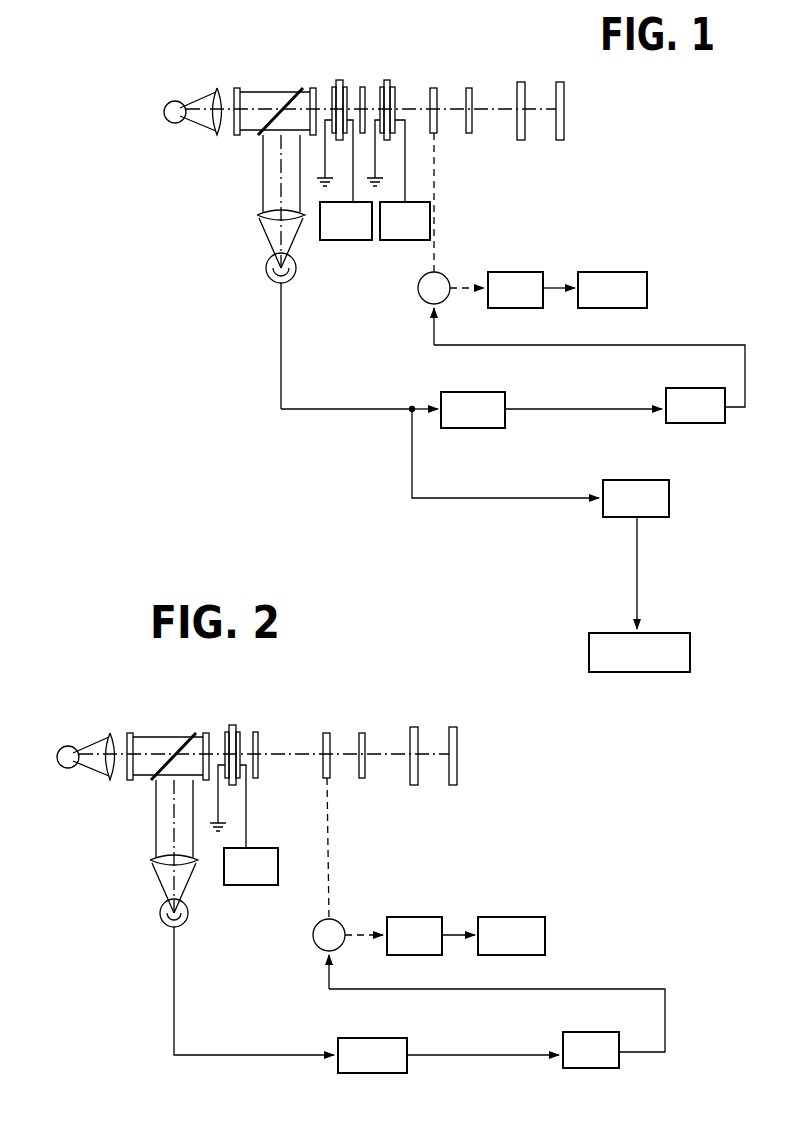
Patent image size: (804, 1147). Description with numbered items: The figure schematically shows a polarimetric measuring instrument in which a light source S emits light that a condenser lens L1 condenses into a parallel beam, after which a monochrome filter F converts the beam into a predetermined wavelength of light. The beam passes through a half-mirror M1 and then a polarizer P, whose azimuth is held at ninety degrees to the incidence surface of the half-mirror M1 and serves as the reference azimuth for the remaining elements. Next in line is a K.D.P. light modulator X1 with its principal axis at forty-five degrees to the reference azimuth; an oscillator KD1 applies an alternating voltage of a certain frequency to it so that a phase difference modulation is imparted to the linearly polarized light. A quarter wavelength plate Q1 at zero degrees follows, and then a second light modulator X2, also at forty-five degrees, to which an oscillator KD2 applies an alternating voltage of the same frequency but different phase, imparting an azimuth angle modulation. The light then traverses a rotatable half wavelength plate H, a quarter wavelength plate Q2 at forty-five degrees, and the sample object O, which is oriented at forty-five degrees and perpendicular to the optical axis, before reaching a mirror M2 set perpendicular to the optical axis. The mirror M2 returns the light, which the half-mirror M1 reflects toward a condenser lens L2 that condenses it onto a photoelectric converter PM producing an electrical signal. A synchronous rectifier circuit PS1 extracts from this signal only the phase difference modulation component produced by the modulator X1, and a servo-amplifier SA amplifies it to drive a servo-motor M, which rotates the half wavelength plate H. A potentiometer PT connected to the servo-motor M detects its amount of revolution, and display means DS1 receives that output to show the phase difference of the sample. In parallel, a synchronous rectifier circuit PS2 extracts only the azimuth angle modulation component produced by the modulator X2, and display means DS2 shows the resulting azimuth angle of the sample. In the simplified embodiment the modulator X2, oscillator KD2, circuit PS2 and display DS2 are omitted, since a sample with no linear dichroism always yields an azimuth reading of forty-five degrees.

In FIG. 1, the light source S is at (175, 100).
In FIG. 2, the light source S is at (68, 745).
In FIG. 1, the condenser lens L1 is at (217, 88).
In FIG. 2, the condenser lens L1 is at (110, 733).
In FIG. 1, the monochrome filter F is at (237, 88).
In FIG. 2, the monochrome filter F is at (132, 733).
In FIG. 1, the half-mirror M1 is at (292, 96).
In FIG. 2, the half-mirror M1 is at (185, 740).
In FIG. 1, the polarizer P is at (313, 88).
In FIG. 2, the polarizer P is at (206, 733).
In FIG. 1, the light modulator X1 is at (339, 80).
In FIG. 2, the light modulator X1 is at (230, 725).
In FIG. 1, the quarter wavelength plate Q1 is at (363, 87).
In FIG. 2, the quarter wavelength plate Q1 is at (256, 732).
In FIG. 1, the light modulator X2 is at (387, 80).
In FIG. 1, the half wavelength plate H is at (433, 88).
In FIG. 2, the half wavelength plate H is at (326, 733).
In FIG. 1, the quarter wavelength plate Q2 is at (469, 88).
In FIG. 2, the quarter wavelength plate Q2 is at (362, 733).
In FIG. 1, the sample object O is at (521, 82).
In FIG. 2, the sample object O is at (414, 727).
In FIG. 1, the mirror M2 is at (560, 82).
In FIG. 2, the mirror M2 is at (453, 727).
In FIG. 1, the condenser lens L2 is at (257, 216).
In FIG. 2, the condenser lens L2 is at (150, 861).
In FIG. 1, the photoelectric converter PM is at (266, 268).
In FIG. 2, the photoelectric converter PM is at (160, 913).
In FIG. 1, the oscillator KD1 is at (350, 240).
In FIG. 2, the oscillator KD1 is at (242, 885).
In FIG. 1, the oscillator KD2 is at (400, 240).
In FIG. 1, the servo-motor M is at (422, 300).
In FIG. 2, the servo-motor M is at (316, 946).
In FIG. 1, the potentiometer PT is at (513, 272).
In FIG. 2, the potentiometer PT is at (420, 917).
In FIG. 1, the display means DS1 is at (608, 272).
In FIG. 2, the display means DS1 is at (508, 917).
In FIG. 1, the display means DS2 is at (672, 633).
In FIG. 1, the synchronous rectifier circuit PS1 is at (505, 395).
In FIG. 2, the synchronous rectifier circuit PS1 is at (368, 1073).
In FIG. 1, the synchronous rectifier circuit PS2 is at (617, 480).
In FIG. 1, the servo-amplifier SA is at (700, 423).
In FIG. 2, the servo-amplifier SA is at (588, 1068).